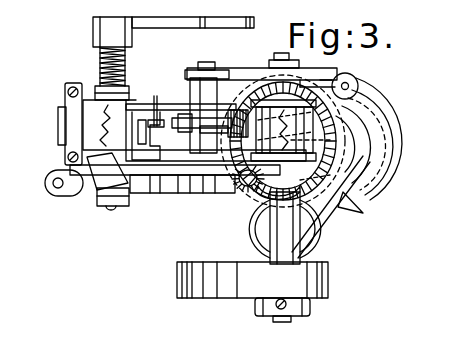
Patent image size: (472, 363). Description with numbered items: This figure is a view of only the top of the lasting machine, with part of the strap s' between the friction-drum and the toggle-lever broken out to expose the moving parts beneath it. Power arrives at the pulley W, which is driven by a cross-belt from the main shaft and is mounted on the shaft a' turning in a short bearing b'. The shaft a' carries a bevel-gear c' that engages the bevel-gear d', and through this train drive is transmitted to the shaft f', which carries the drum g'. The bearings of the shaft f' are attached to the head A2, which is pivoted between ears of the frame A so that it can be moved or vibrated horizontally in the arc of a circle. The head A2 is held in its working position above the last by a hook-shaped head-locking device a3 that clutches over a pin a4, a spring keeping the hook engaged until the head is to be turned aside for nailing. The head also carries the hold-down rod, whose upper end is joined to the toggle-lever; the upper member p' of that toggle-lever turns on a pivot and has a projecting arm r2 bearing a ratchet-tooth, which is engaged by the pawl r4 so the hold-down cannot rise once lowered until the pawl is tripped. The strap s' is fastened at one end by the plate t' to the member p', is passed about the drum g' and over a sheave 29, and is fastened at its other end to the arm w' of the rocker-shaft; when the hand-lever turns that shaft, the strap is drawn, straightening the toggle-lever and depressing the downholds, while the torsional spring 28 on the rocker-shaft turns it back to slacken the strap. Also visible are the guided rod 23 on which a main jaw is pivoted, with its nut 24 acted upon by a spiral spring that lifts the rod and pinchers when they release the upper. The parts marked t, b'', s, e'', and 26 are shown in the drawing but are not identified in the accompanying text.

The arm block t is at (112, 23).
The top bar b'' is at (193, 14).
The torsional spring 28 is at (100, 59).
The slide block s is at (104, 125).
The plate t' is at (70, 124).
The upper member of the toggle-lever p' is at (152, 136).
The arm of the rocker-shaft w' is at (154, 104).
The shaft f' is at (262, 70).
The pivot boss e'' is at (335, 78).
The strap s' is at (210, 112).
The sheave 29 is at (196, 128).
The bevel-gear d' is at (289, 141).
The frame A is at (393, 148).
The pin a4 is at (350, 193).
The head-locking device a3 is at (362, 210).
The short bearing b' is at (285, 228).
The pulley W is at (271, 287).
The shaft a' is at (282, 316).
The projecting arm r2 is at (107, 171).
The lobe 26 is at (67, 183).
The nut 24 is at (55, 176).
The guided rod 23 is at (52, 190).
The head A2 is at (153, 194).
The pawl r4 is at (188, 190).
The drum g' is at (239, 192).
The bevel-gear c' is at (269, 202).